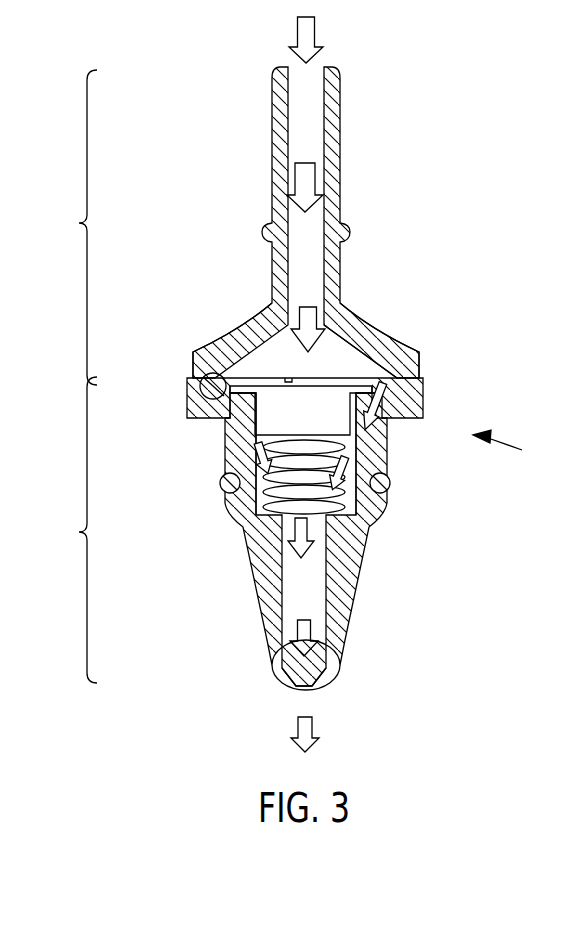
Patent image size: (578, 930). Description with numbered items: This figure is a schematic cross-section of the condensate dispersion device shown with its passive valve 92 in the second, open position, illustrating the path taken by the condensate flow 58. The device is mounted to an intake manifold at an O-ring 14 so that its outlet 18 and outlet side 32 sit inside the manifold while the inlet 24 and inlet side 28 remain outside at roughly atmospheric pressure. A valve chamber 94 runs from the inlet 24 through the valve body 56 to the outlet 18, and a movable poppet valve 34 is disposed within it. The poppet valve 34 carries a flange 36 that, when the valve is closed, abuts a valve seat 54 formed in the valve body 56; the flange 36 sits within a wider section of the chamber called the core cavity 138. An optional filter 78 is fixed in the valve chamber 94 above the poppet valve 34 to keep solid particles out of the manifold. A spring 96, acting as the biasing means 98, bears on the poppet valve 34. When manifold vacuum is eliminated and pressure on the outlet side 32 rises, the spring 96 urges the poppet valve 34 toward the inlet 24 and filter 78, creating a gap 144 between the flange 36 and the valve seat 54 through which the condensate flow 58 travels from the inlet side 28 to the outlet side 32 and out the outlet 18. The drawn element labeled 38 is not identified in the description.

The O-ring 14 is at (387, 484).
The outlet 18 is at (330, 686).
The inlet 24 is at (332, 74).
The inlet side 28 is at (76, 227).
The outlet side 32 is at (76, 530).
The poppet valve 34 is at (333, 400).
The flange 36 is at (202, 364).
The spring 38 is at (222, 465).
The valve seat 54 is at (262, 424).
The valve body 56 is at (330, 296).
The condensate flow 58 is at (305, 183).
The filter 78 is at (203, 349).
The passive valve 92 is at (507, 447).
The valve chamber 94 is at (318, 258).
The spring 96 is at (238, 518).
The biasing means 98 is at (277, 517).
The core cavity 138 is at (263, 343).
The gap 144 is at (187, 400).